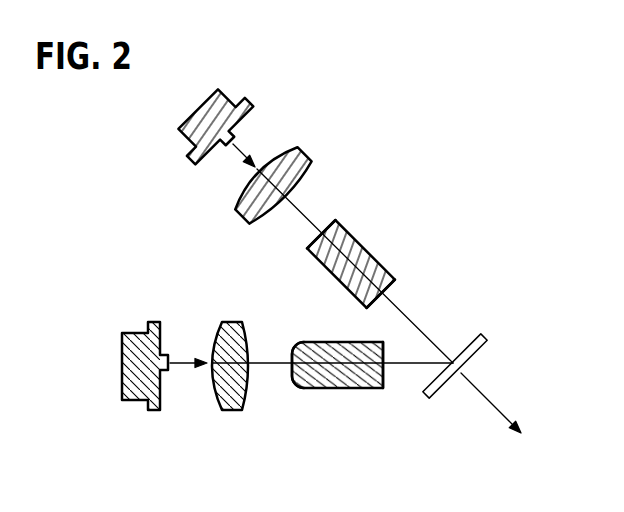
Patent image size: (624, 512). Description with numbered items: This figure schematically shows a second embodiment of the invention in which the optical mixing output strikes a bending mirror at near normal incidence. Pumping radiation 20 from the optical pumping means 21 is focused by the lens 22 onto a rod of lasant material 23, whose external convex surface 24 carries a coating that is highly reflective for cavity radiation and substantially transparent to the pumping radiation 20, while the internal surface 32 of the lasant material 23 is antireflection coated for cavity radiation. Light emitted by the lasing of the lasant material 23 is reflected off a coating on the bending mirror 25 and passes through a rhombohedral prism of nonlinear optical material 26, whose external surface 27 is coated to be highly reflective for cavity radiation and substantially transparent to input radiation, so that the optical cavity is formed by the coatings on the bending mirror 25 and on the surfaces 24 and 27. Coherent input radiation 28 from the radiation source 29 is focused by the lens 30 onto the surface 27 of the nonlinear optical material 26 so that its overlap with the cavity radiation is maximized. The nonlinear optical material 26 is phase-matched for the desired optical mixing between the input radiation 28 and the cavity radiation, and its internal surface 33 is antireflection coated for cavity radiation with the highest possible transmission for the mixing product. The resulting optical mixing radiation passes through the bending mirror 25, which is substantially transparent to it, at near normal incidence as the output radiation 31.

The radiation 20 is at (183, 360).
The optical pumping means 21 is at (137, 399).
The lens 22 is at (233, 408).
The rod of lasant material 23 is at (355, 385).
The convex surface 24 is at (293, 385).
The bending mirror 25 is at (472, 358).
The rhombohedral prism of nonlinear optical material 26 is at (367, 263).
The surface 27 is at (327, 227).
The coherent input radiation 28 is at (235, 140).
The radiation source 29 is at (226, 98).
The lens 30 is at (297, 157).
The output radiation 31 is at (488, 403).
The internal surface 32 is at (393, 380).
The internal surface 33 is at (393, 292).